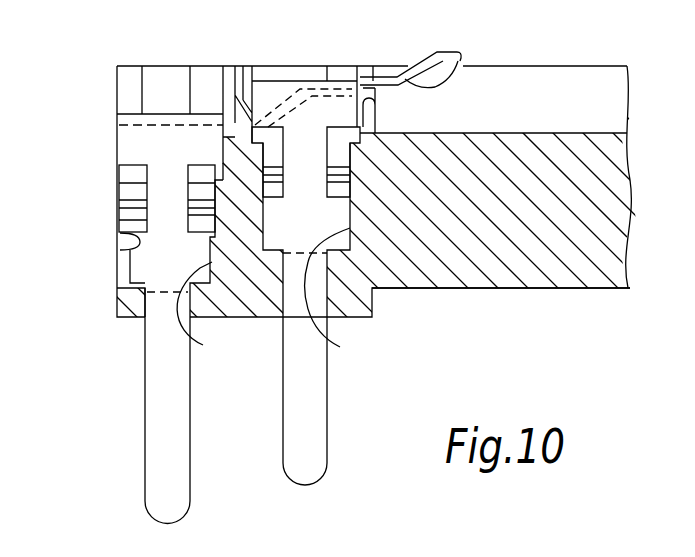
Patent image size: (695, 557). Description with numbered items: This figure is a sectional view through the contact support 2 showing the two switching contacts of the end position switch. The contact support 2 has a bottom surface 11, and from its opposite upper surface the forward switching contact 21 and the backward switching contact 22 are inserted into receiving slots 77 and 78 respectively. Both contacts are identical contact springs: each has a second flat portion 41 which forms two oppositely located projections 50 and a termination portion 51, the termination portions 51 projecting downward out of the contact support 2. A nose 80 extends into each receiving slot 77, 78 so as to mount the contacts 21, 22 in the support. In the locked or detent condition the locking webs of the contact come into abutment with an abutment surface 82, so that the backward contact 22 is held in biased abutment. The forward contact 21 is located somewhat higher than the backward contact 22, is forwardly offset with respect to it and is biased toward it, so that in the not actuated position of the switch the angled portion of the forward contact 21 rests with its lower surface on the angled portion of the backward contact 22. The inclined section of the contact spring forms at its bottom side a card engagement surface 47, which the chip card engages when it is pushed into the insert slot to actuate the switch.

The contact support 2 is at (613, 200).
The bottom surface 11 is at (530, 292).
The forward switching contact 21 is at (293, 57).
The backward switching contact 22 is at (172, 103).
The second flat portion 41 is at (157, 188).
The card engagement surface 47 is at (467, 67).
The projections 50 is at (137, 263).
The termination portion 51 is at (162, 399).
The receiving slot 77 is at (341, 303).
The receiving slot 78 is at (207, 320).
The nose 80 is at (135, 218).
The abutment surface 82 is at (120, 238).